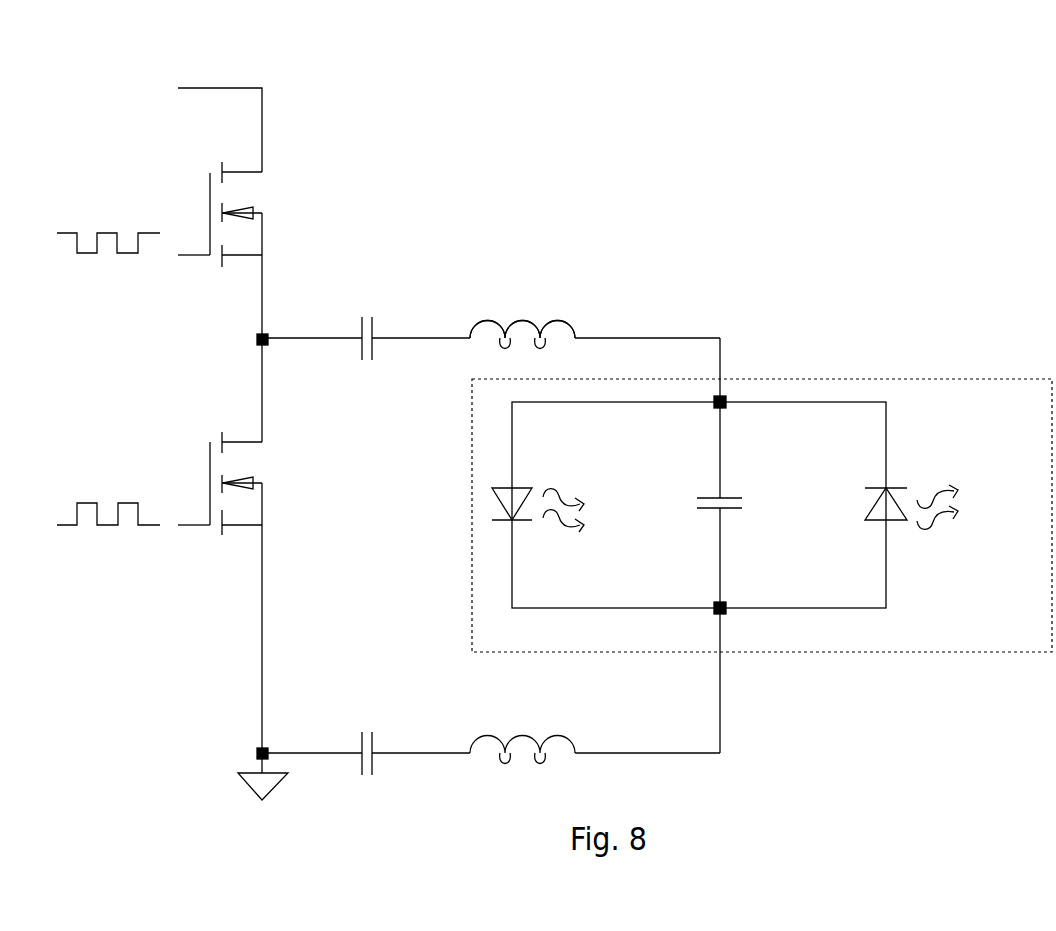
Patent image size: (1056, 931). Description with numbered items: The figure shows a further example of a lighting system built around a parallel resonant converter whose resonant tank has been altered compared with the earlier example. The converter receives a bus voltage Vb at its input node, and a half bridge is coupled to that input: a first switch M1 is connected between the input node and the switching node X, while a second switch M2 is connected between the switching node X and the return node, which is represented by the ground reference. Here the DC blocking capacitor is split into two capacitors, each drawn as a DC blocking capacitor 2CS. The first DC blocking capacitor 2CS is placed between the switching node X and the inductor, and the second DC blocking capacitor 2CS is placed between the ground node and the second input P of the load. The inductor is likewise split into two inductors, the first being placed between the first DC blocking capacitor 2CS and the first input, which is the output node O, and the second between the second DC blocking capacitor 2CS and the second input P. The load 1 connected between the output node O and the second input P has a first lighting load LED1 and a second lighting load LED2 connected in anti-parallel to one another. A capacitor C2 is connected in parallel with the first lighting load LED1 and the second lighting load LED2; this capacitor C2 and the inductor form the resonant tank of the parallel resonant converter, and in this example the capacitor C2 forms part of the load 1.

The load 1 is at (762, 487).
The first switch M1 is at (197, 250).
The second switch M2 is at (198, 546).
The DC blocking capacitor 2CS is at (369, 516).
The capacitor C2 is at (744, 505).
The first lighting load LED1 is at (567, 474).
The second lighting load LED2 is at (943, 474).
The bus voltage Vb is at (216, 101).
The switching node X is at (245, 338).
The output node O is at (694, 340).
The second input P is at (700, 711).